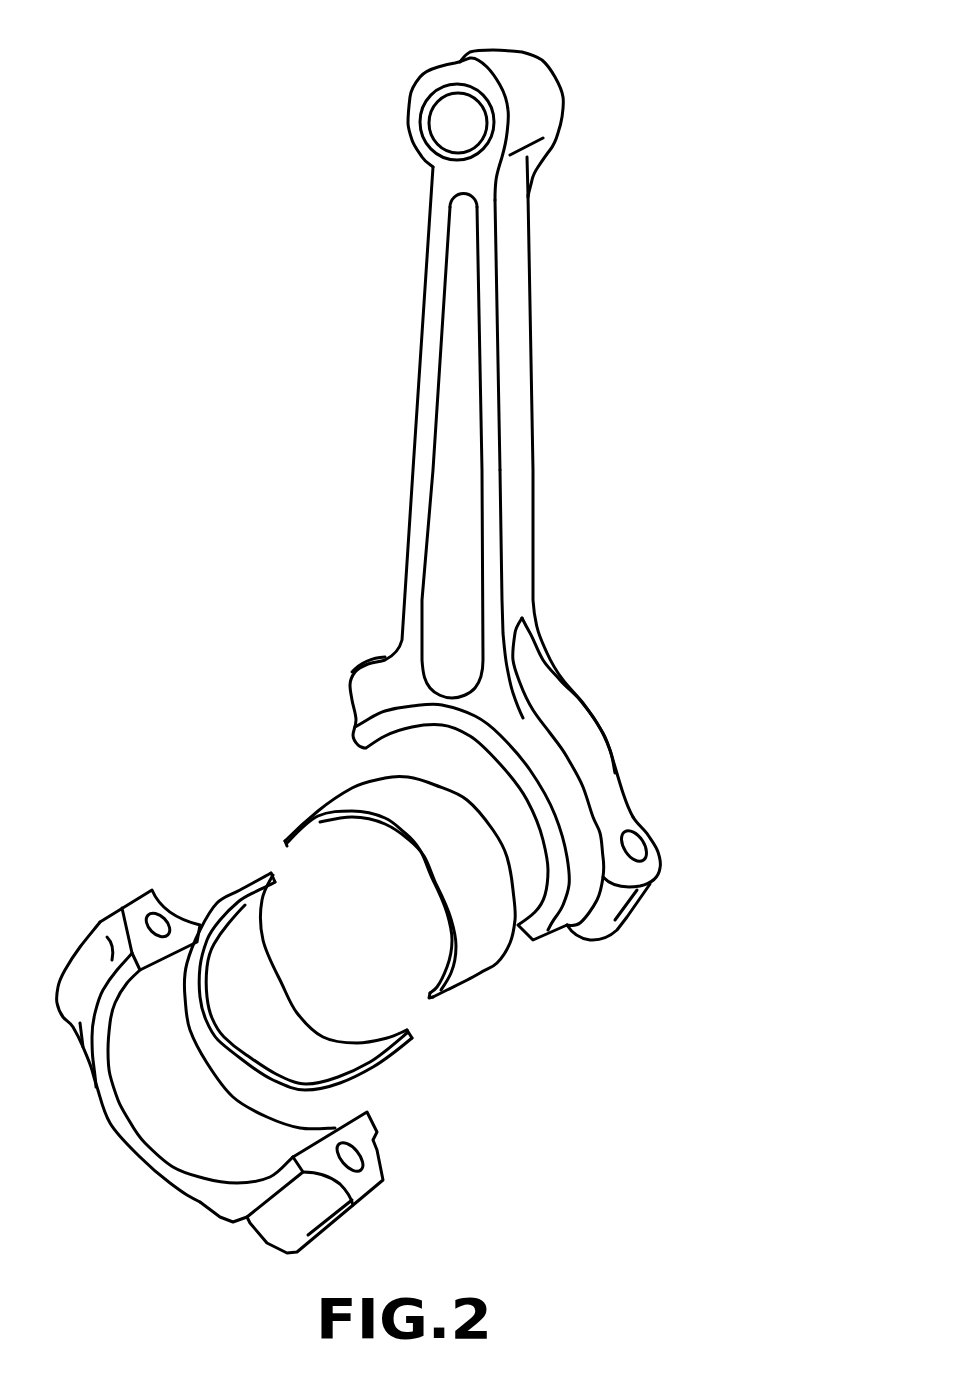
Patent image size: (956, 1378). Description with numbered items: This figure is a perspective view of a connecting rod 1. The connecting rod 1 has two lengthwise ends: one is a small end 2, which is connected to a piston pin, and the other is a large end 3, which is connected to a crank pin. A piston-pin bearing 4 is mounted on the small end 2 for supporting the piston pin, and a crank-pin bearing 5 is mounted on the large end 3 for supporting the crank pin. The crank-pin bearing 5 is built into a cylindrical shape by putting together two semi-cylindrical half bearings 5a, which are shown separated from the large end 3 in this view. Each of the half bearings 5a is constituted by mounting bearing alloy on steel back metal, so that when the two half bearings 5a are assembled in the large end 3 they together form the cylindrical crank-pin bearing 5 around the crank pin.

The connecting rod 1 is at (307, 620).
The small end 2 is at (537, 77).
The large end 3 is at (632, 945).
The piston-pin bearing 4 is at (450, 128).
The crank-pin bearing 5 is at (278, 813).
The half bearings 5a is at (467, 987).